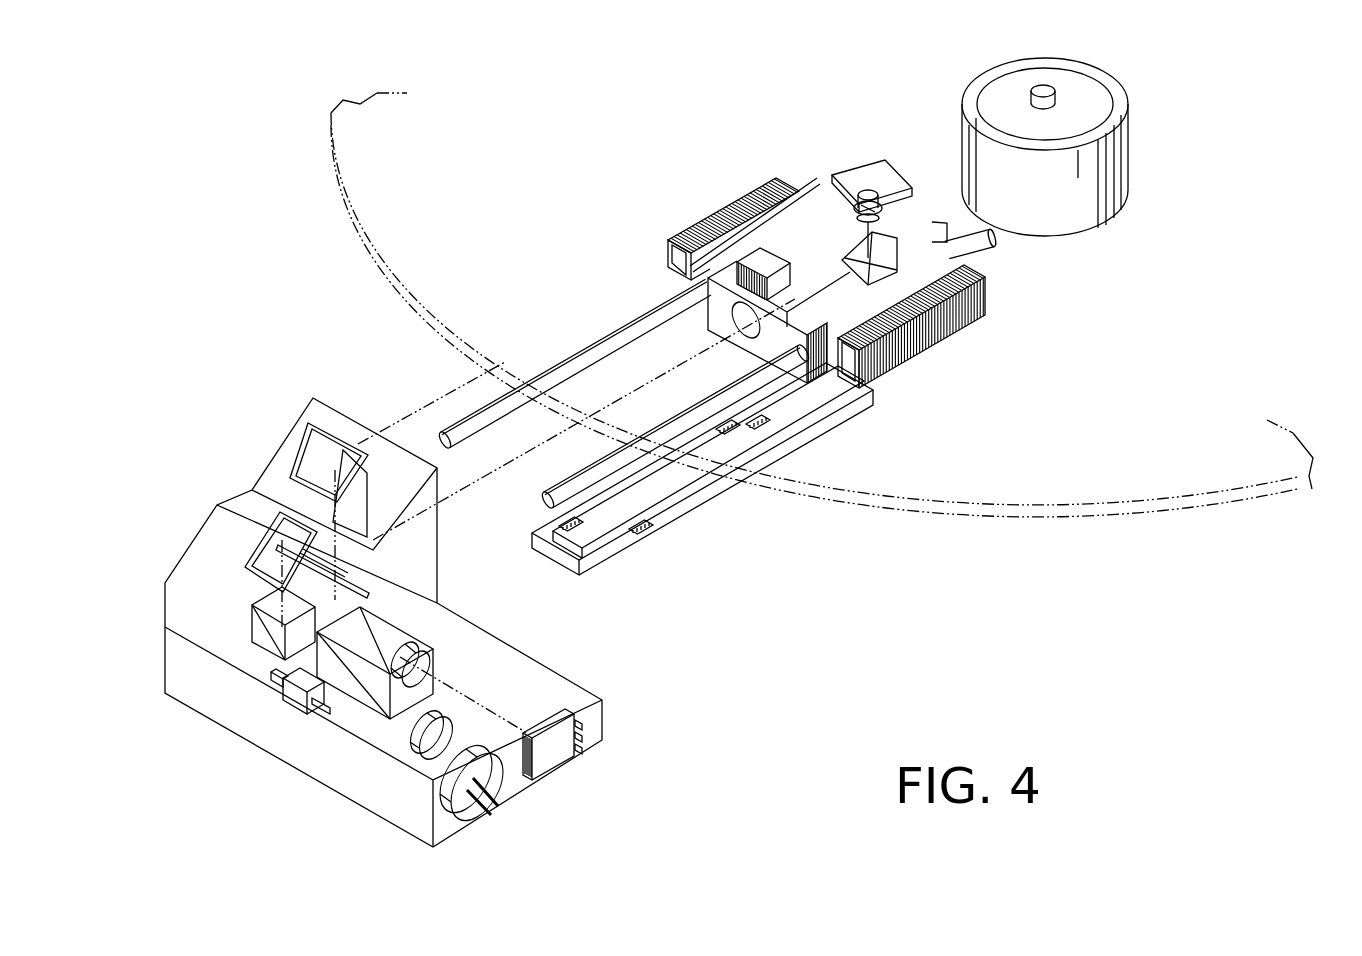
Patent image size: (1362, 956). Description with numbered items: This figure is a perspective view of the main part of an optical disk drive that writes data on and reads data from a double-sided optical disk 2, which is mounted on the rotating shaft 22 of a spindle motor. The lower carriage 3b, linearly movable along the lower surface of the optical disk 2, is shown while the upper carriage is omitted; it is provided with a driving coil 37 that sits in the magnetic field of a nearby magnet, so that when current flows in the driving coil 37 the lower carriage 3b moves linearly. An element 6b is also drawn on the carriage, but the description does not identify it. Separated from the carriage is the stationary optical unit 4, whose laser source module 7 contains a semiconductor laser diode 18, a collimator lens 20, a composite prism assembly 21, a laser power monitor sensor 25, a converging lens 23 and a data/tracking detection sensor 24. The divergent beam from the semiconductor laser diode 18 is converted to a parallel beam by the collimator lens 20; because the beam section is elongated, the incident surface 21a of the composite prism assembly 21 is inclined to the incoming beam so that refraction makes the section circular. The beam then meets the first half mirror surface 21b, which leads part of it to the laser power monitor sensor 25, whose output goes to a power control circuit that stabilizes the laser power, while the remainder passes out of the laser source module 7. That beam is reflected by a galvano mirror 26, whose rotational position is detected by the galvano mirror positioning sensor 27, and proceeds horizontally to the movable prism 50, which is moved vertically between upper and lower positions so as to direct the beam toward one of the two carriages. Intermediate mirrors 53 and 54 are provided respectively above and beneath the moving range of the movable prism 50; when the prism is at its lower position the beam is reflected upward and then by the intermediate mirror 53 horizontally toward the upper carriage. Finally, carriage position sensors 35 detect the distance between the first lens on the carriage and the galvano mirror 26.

The optical disk 2 is at (1090, 521).
The lower carriage 3b is at (777, 223).
The stationary optical unit 4 is at (182, 527).
The objective lens holder 6b is at (885, 170).
The laser source module 7 is at (357, 867).
The semiconductor laser diode 18 is at (468, 808).
The collimator lens 20 is at (422, 763).
The composite prism assembly 21 is at (355, 708).
The incident surface 21a is at (362, 695).
The first half mirror surface 21b is at (334, 642).
The rotating shaft 22 is at (1115, 162).
The converging lens 23 is at (432, 663).
The data/tracking detection sensor 24 is at (550, 743).
The laser power monitor sensor 25 is at (293, 707).
The galvano mirror 26 is at (272, 558).
The galvano mirror positioning sensor 27 is at (258, 645).
The carriage position sensors 35 is at (697, 490).
The driving coil 37 is at (697, 215).
The movable prism 50 is at (437, 458).
The intermediate mirror 53 is at (312, 447).
The intermediate mirror 54 is at (360, 578).